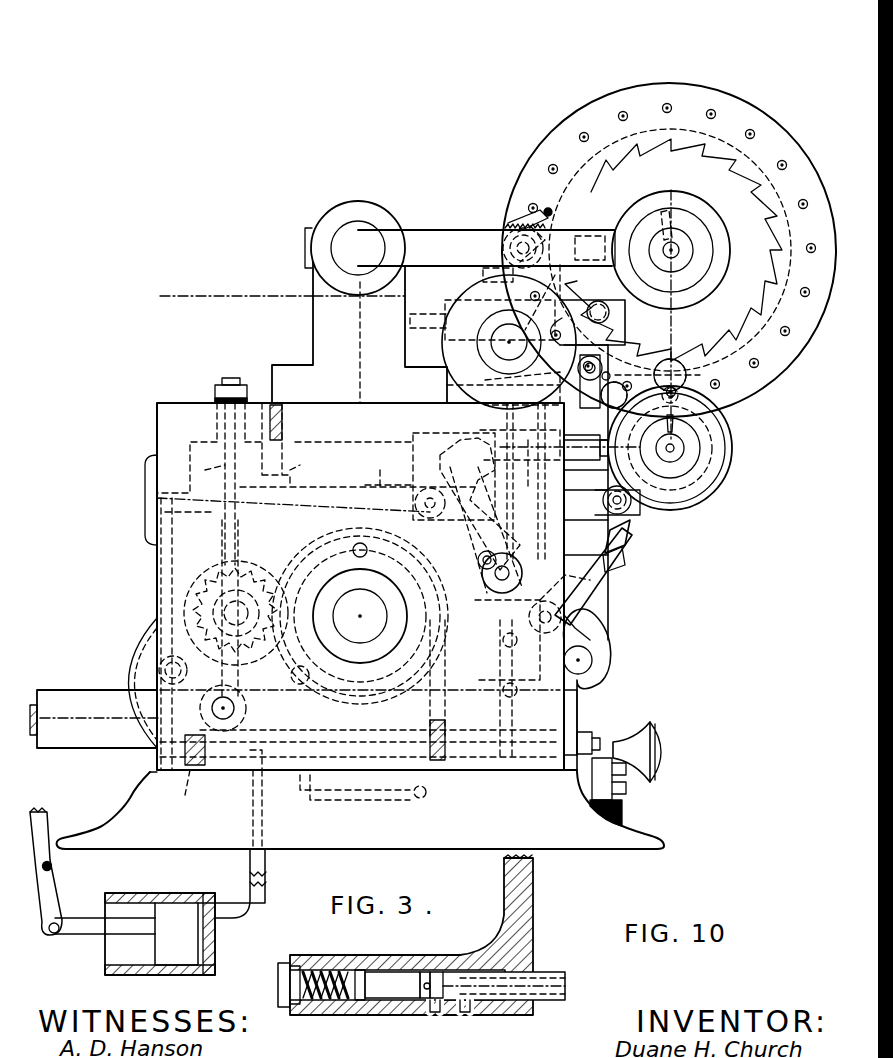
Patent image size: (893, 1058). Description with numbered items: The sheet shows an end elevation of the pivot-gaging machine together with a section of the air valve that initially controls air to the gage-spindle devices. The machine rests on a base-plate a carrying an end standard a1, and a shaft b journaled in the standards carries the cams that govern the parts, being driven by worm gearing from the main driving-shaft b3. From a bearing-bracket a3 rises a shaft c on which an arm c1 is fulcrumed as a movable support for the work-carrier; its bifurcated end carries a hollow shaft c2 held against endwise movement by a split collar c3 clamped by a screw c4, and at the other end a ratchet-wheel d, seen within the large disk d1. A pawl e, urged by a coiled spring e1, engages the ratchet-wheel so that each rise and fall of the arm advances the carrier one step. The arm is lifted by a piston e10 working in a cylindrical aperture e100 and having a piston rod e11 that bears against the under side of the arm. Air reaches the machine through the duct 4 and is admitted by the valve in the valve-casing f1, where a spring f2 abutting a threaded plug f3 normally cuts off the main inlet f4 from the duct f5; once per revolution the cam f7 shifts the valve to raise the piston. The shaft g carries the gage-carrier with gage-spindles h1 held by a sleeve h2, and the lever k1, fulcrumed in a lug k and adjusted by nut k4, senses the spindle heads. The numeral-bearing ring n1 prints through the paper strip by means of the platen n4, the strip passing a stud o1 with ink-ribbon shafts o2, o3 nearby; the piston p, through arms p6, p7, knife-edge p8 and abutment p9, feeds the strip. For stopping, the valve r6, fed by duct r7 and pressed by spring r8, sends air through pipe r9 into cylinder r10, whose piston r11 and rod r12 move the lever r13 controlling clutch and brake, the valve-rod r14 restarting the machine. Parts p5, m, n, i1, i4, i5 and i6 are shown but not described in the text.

In FIG. 3, the base-plate a is at (360, 809).
In FIG. 3, the end standard a1 is at (190, 555).
In FIG. 3, the bearing-bracket a3 is at (303, 332).
In FIG. 3, the shaft b is at (360, 598).
In FIG. 3, the main driving-shaft b3 is at (40, 725).
In FIG. 3, the shaft c is at (355, 248).
In FIG. 3, the arm c1 is at (438, 238).
In FIG. 3, the hollow shaft c2 is at (682, 256).
In FIG. 3, the split collar c3 is at (690, 232).
In FIG. 3, the screw c4 is at (664, 212).
In FIG. 3, the ratchet-wheel d is at (622, 160).
In FIG. 3, the index disk d1 is at (651, 92).
In FIG. 3, the pawl e is at (509, 337).
In FIG. 3, the coiled spring e1 is at (500, 235).
In FIG. 3, the piston e10 is at (447, 388).
In FIG. 3, the piston rod e11 is at (485, 275).
In FIG. 3, the cylindrical aperture e100 is at (446, 330).
In FIG. 3, the shaft g is at (684, 448).
In FIG. 3, the gage-spindle h1 is at (705, 490).
In FIG. 3, the sleeve h2 is at (728, 486).
In FIG. 3, the slide bar i1 is at (378, 469).
In FIG. 3, the slide block i4 is at (302, 464).
In FIG. 3, the slide guide i5 is at (190, 521).
In FIG. 3, the slide stop i6 is at (211, 472).
In FIG. 3, the lug k is at (590, 410).
In FIG. 3, the lever k1 is at (620, 380).
In FIG. 3, the adjusting-nut k4 is at (688, 374).
In FIG. 3, the rod m is at (565, 730).
In FIG. 3, the cam shaft n is at (670, 447).
In FIG. 3, the numeral-bearing ring n1 is at (481, 515).
In FIG. 3, the platen n4 is at (602, 458).
In FIG. 3, the stud o1 is at (610, 314).
In FIG. 3, the ink-ribbon shaft o2 is at (628, 512).
In FIG. 3, the ink-ribbon shaft o3 is at (660, 405).
In FIG. 3, the piston p is at (605, 630).
In FIG. 3, the lever arm p5 is at (128, 658).
In FIG. 3, the arm p6 is at (596, 662).
In FIG. 3, the arm p7 is at (585, 590).
In FIG. 3, the sharpened transverse edge p8 is at (628, 540).
In FIG. 3, the abutment p9 is at (608, 570).
In FIG. 3, the valve r6 is at (250, 780).
In FIG. 3, the duct r7 is at (360, 800).
In FIG. 3, the spring r8 is at (181, 789).
In FIG. 3, the pipe r9 is at (265, 894).
In FIG. 3, the cylinder r10 is at (160, 922).
In FIG. 3, the piston r11 is at (195, 932).
In FIG. 3, the piston rod r12 is at (92, 930).
In FIG. 3, the lever r13 is at (58, 893).
In FIG. 3, the valve-rod r14 is at (600, 748).
In FIG. 3, the duct 4 is at (428, 792).
In FIG. 10, the valve-casing f1 is at (387, 985).
In FIG. 10, the spring f2 is at (320, 1002).
In FIG. 10, the threaded plug f3 is at (278, 982).
In FIG. 10, the main inlet f4 is at (522, 940).
In FIG. 10, the duct f5 is at (436, 1010).
In FIG. 10, the cam f7 is at (424, 992).